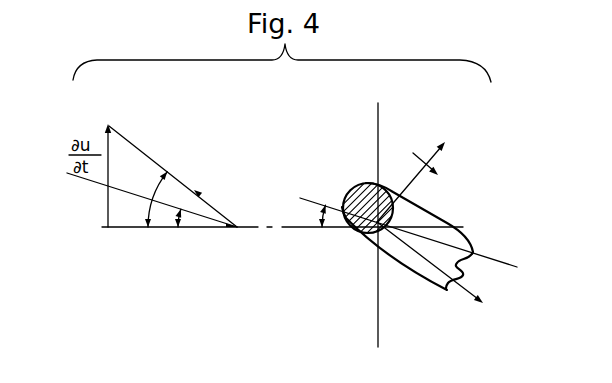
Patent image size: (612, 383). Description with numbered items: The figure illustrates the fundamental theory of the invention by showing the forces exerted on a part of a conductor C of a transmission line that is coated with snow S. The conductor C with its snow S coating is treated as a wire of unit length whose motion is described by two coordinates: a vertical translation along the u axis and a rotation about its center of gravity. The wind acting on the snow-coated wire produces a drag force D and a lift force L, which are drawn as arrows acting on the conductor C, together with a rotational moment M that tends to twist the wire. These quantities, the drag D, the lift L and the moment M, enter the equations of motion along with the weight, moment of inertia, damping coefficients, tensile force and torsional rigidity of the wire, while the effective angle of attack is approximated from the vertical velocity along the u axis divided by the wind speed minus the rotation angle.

The conductor C is at (360, 190).
The snow S is at (409, 259).
The lift force L is at (418, 171).
The rotational moment M is at (435, 174).
The drag force D is at (439, 272).
The u axis u is at (376, 212).